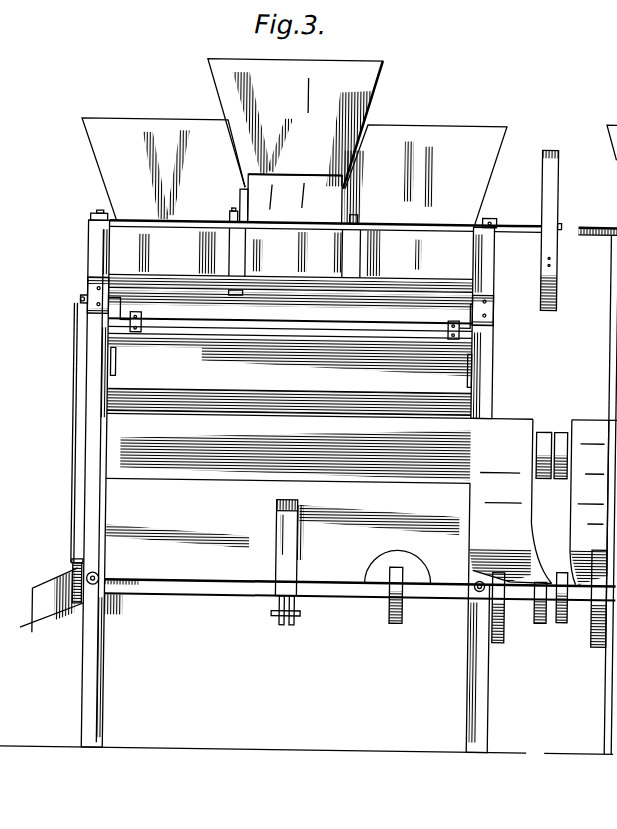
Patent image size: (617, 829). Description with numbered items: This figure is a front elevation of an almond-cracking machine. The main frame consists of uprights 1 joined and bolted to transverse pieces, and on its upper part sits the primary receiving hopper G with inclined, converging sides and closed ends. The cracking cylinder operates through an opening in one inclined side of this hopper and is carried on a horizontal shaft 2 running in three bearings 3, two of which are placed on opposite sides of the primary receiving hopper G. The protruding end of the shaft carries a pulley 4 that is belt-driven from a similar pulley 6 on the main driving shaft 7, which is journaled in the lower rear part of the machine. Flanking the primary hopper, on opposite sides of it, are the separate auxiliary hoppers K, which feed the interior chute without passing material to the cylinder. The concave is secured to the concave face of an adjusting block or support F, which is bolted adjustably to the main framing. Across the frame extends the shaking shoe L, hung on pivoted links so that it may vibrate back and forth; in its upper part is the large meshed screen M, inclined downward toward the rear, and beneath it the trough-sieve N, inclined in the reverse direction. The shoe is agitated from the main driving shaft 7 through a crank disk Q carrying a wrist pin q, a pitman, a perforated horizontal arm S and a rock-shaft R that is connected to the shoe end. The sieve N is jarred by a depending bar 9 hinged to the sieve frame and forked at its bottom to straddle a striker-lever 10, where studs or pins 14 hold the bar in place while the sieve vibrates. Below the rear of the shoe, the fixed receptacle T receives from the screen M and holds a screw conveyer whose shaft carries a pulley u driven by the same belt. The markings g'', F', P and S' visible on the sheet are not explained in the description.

The uprights 1 is at (93, 708).
The horizontal shaft 2 is at (436, 230).
The bearings 3 is at (226, 216).
The pulley 4 is at (545, 201).
The pulley 6 is at (561, 622).
The main driving shaft 7 is at (431, 598).
The depending bar 9 is at (289, 548).
The striker-lever 10 is at (289, 626).
The studs or pins 14 is at (273, 615).
The primary receiving hopper G is at (294, 124).
The auxiliary hopper K is at (349, 173).
The hopper lip g'' is at (295, 162).
The feed box F' is at (291, 198).
The adjusting block or support F is at (132, 613).
The rock-shaft R is at (274, 325).
The large meshed screen M is at (290, 309).
The fixed receptacle T is at (132, 321).
The shaking shoe L is at (467, 349).
The panel P is at (252, 389).
The trough-sieve N is at (200, 394).
The perforated horizontal arm S is at (64, 417).
The clamp plates S' is at (288, 313).
The crank disk Q is at (45, 609).
The wrist pin q is at (61, 581).
The pulley u is at (560, 478).